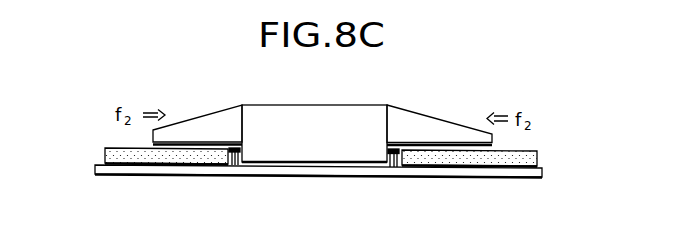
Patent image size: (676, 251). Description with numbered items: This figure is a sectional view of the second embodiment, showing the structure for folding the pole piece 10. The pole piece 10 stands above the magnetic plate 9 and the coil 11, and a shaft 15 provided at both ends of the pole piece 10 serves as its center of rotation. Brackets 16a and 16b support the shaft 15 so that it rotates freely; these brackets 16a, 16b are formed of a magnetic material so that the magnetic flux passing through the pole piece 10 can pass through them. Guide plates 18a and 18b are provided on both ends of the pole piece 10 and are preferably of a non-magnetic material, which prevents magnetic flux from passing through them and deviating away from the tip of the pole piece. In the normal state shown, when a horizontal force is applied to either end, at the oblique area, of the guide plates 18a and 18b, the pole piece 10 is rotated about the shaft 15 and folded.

The magnetic plate 9 is at (542, 176).
The pole piece 10 is at (362, 115).
The coil 11 is at (107, 156).
The shaft 15 is at (229, 153).
The bracket 16a is at (241, 161).
The bracket 16b is at (386, 164).
The guide plate 18a is at (208, 132).
The guide plate 18b is at (452, 131).